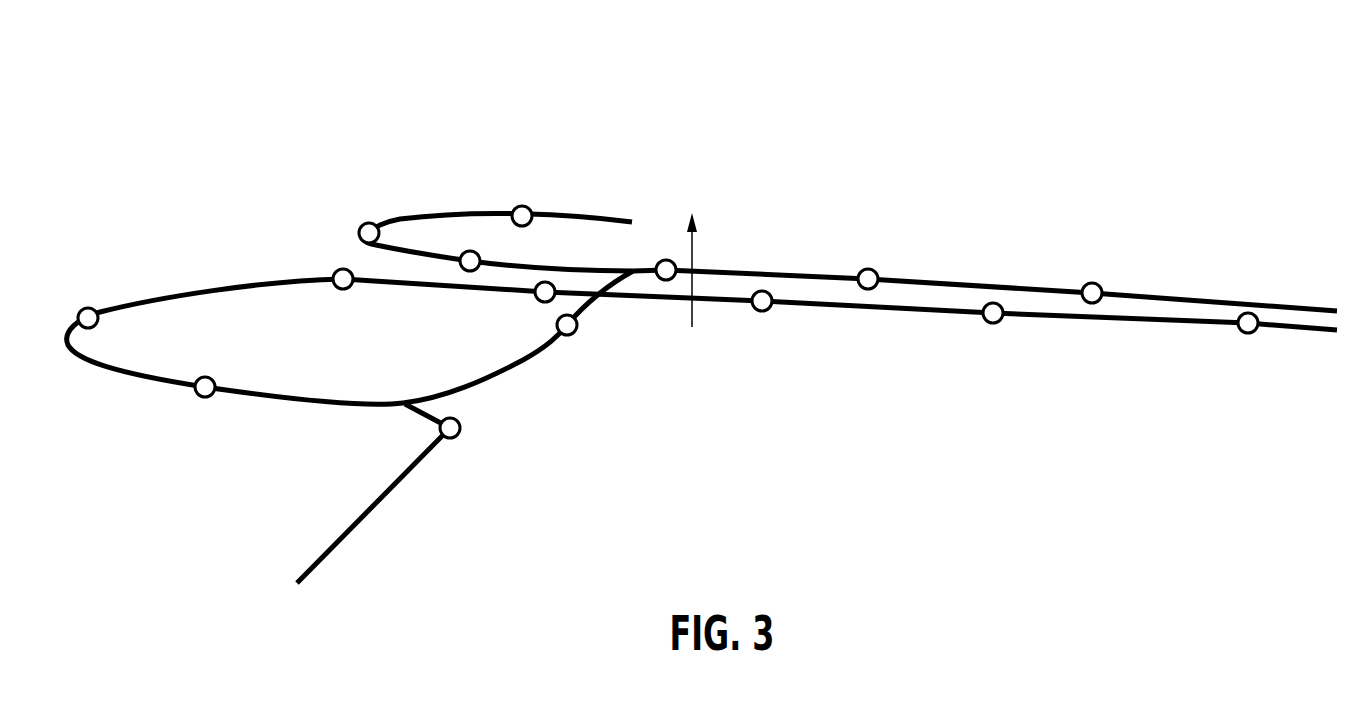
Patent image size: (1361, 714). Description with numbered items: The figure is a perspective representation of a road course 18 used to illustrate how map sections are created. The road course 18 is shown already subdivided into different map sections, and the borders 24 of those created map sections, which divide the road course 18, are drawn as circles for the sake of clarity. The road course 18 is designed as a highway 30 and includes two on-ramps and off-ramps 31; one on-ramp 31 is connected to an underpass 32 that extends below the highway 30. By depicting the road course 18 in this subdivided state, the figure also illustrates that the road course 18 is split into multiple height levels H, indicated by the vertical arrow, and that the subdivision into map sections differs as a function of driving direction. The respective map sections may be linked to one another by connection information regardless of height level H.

The road course 18 is at (288, 160).
The highway 30 is at (1036, 289).
The on-ramps and off-ramps 31 is at (220, 287).
The underpass 32 is at (585, 313).
The borders 24 is at (206, 397).
The height levels H is at (700, 316).